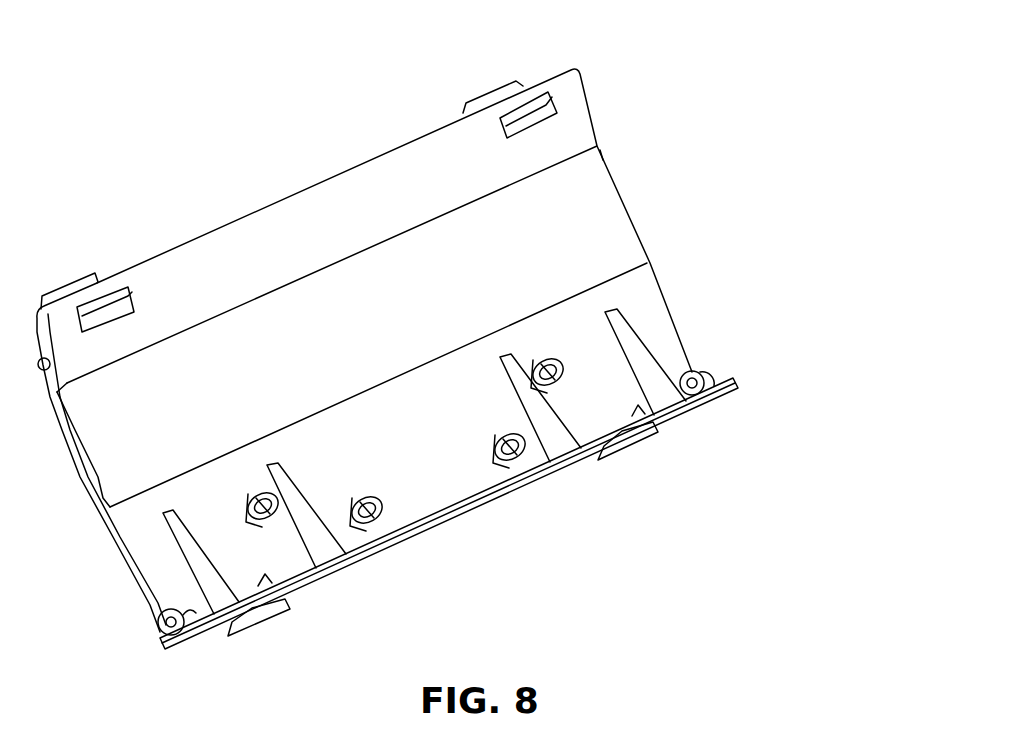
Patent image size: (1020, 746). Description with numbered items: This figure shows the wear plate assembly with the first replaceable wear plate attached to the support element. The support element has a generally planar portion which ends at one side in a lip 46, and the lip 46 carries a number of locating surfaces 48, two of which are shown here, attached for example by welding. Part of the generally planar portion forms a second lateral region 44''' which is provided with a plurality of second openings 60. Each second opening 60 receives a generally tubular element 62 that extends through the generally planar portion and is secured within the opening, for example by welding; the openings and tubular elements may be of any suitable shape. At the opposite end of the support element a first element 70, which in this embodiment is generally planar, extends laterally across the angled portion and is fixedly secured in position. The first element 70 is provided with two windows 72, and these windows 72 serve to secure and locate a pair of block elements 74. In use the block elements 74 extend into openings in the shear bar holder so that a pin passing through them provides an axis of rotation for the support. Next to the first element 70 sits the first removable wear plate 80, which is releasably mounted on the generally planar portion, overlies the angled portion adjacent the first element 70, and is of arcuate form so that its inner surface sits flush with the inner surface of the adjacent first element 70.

The second lateral region 44''' is at (388, 350).
The lip 46 is at (447, 522).
The locating surface 48 is at (261, 636).
The second opening 60 is at (247, 505).
The generally tubular element 62 is at (250, 528).
The first element 70 is at (581, 118).
The window 72 is at (500, 133).
The block element 74 is at (500, 83).
The first removable wear plate 80 is at (606, 203).